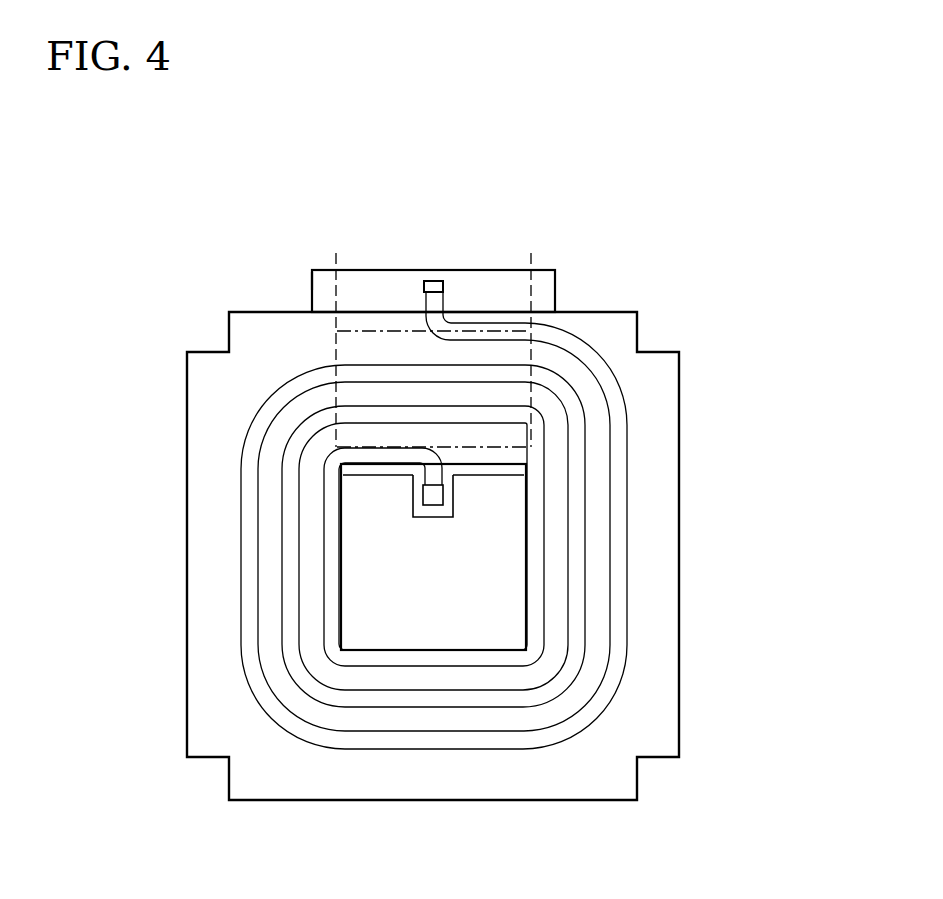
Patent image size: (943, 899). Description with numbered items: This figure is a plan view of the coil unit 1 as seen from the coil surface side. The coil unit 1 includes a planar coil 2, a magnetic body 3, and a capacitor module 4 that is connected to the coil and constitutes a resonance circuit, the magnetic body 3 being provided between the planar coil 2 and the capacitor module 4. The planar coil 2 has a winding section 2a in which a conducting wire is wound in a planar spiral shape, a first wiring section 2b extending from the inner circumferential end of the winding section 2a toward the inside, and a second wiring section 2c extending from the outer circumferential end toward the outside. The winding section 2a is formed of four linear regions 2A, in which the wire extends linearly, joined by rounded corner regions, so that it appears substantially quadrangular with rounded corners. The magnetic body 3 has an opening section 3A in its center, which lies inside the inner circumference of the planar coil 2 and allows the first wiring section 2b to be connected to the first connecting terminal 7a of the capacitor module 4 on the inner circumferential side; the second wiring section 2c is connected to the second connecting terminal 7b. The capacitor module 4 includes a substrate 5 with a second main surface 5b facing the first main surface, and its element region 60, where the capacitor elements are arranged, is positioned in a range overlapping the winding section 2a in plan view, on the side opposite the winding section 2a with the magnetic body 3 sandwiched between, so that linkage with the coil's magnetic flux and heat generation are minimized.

The coil unit 1 is at (167, 140).
The planar coil 2 is at (425, 748).
The winding section 2a is at (365, 708).
The first wiring section 2b is at (437, 482).
The second wiring section 2c is at (425, 300).
The linear region 2A is at (507, 322).
The magnetic body 3 is at (682, 526).
The opening section 3A is at (345, 573).
The capacitor module 4 is at (500, 268).
The substrate 5 is at (362, 268).
The second main surface 5b is at (318, 280).
The first connecting terminal 7a is at (433, 505).
The second connecting terminal 7b is at (432, 281).
The element region 60 is at (335, 352).